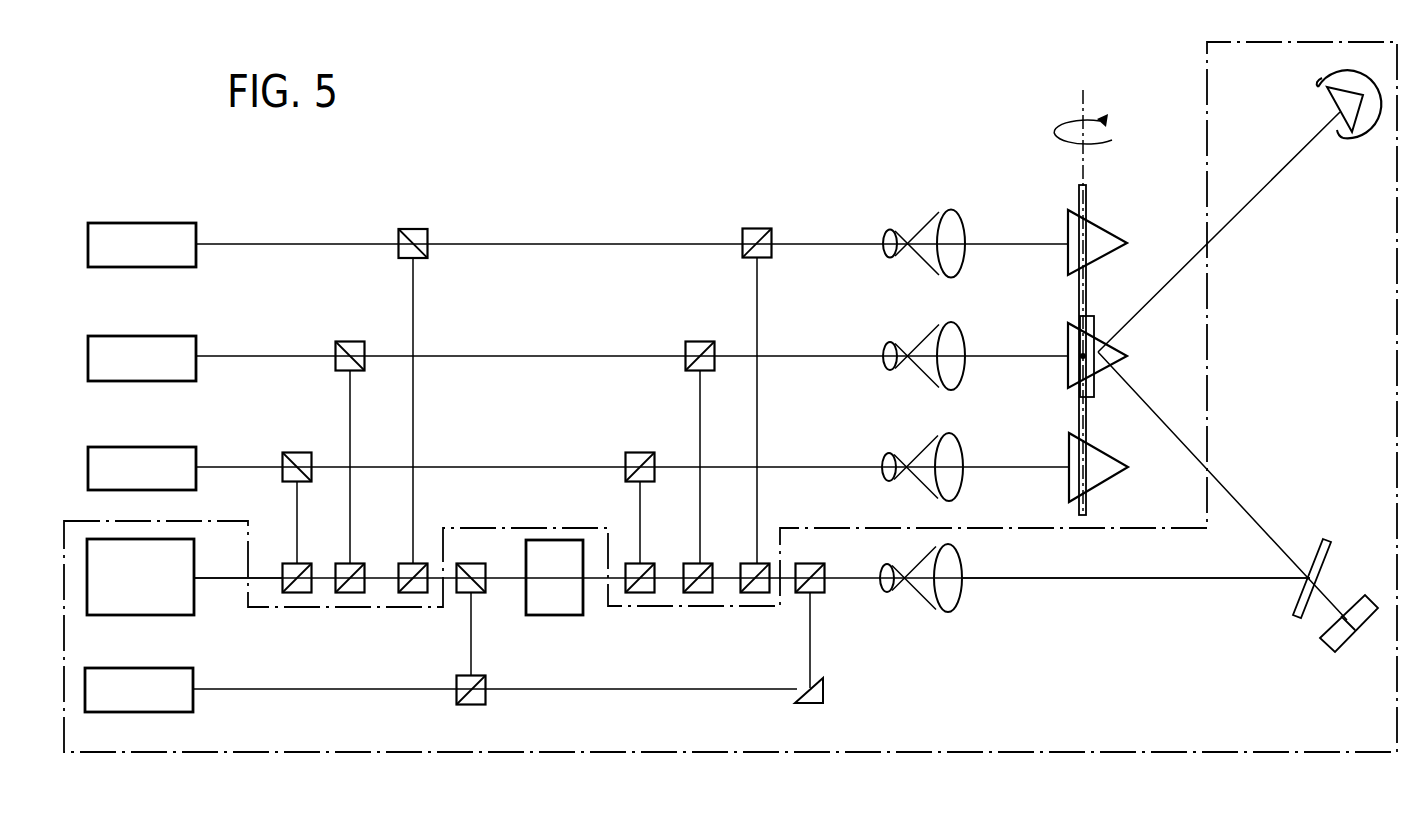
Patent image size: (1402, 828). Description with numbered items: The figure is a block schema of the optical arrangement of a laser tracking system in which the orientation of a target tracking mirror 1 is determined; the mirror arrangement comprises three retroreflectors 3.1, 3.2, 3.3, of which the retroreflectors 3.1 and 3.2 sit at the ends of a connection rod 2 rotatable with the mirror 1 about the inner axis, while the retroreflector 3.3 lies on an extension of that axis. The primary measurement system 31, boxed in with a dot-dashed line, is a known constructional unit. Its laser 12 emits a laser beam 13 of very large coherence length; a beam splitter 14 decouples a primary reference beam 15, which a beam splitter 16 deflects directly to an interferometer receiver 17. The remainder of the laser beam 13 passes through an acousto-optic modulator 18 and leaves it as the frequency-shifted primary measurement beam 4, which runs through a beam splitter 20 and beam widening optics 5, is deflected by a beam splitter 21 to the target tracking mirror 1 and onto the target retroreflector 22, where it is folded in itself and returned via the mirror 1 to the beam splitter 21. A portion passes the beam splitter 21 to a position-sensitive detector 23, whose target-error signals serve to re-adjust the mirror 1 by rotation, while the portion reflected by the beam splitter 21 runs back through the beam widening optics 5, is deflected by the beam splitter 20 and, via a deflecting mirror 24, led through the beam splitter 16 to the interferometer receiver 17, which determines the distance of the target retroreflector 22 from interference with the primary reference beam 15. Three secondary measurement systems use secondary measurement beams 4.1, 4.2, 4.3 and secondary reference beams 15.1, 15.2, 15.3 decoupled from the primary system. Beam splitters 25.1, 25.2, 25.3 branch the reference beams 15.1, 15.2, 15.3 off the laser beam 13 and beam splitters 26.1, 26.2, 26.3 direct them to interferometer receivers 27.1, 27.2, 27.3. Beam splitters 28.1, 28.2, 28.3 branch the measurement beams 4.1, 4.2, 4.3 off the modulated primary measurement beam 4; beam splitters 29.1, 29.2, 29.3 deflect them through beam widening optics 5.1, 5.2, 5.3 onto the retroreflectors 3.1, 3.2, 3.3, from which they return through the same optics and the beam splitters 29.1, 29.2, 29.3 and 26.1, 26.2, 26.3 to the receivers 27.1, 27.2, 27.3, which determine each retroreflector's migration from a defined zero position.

The target tracking mirror 1 is at (1094, 385).
The connection rod 2 is at (1087, 195).
The retroreflector 3.1 is at (1069, 456).
The retroreflector 3.2 is at (1068, 232).
The retroreflector 3.3 is at (1068, 345).
The primary measurement beam 4 is at (1046, 580).
The secondary measurement beam 4.1 is at (640, 503).
The secondary measurement beam 4.2 is at (757, 303).
The secondary measurement beam 4.3 is at (700, 392).
The beam widening optics 5 is at (912, 619).
The beam widening optics 5.1 is at (926, 436).
The beam widening optics 5.2 is at (930, 214).
The beam widening optics 5.3 is at (930, 327).
The laser 12 is at (154, 590).
The laser beam 13 is at (214, 580).
The beam splitter 14 is at (477, 563).
The primary reference beam 15 is at (471, 643).
The secondary reference beam 15.1 is at (297, 505).
The secondary reference beam 15.2 is at (413, 303).
The secondary reference beam 15.3 is at (350, 390).
The beam splitter 16 is at (471, 705).
The interferometer receiver 17 is at (153, 701).
The acousto-optic modulator 18 is at (553, 550).
The beam splitter 20 is at (817, 593).
The beam splitter 21 is at (1312, 558).
The target retroreflector 22 is at (1365, 140).
The position-sensitive detector 23 is at (1328, 646).
The deflecting mirror 24 is at (826, 691).
The beam splitter 25.1 is at (300, 593).
The beam splitter 25.2 is at (416, 593).
The beam splitter 25.3 is at (352, 593).
The beam splitter 26.1 is at (294, 453).
The beam splitter 26.2 is at (412, 229).
The beam splitter 26.3 is at (347, 341).
The interferometer receiver 27.1 is at (147, 460).
The interferometer receiver 27.2 is at (147, 233).
The interferometer receiver 27.3 is at (147, 346).
The beam splitter 28.1 is at (641, 593).
The beam splitter 28.2 is at (758, 593).
The beam splitter 28.3 is at (699, 593).
The beam splitter 29.1 is at (637, 453).
The beam splitter 29.2 is at (752, 228).
The beam splitter 29.3 is at (697, 342).
The primary measurement system 31 is at (1395, 249).